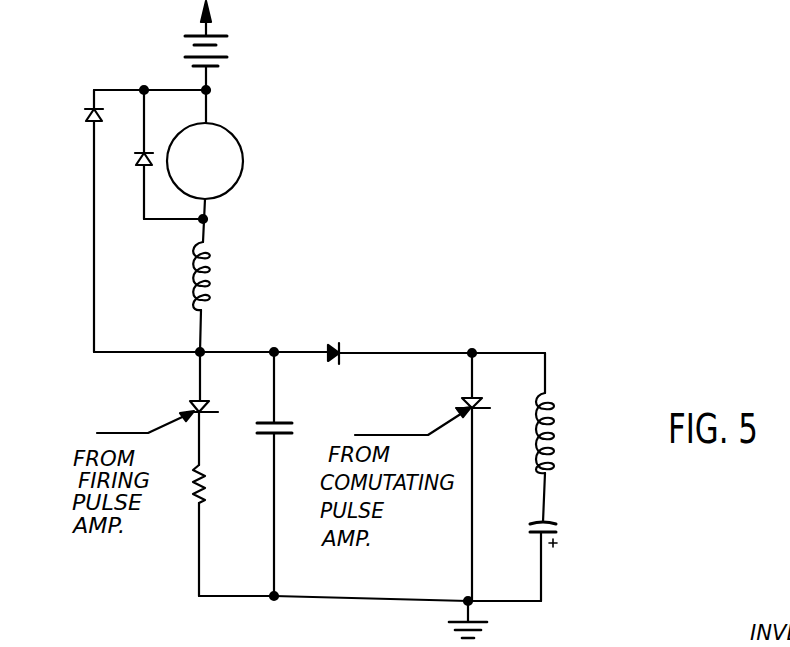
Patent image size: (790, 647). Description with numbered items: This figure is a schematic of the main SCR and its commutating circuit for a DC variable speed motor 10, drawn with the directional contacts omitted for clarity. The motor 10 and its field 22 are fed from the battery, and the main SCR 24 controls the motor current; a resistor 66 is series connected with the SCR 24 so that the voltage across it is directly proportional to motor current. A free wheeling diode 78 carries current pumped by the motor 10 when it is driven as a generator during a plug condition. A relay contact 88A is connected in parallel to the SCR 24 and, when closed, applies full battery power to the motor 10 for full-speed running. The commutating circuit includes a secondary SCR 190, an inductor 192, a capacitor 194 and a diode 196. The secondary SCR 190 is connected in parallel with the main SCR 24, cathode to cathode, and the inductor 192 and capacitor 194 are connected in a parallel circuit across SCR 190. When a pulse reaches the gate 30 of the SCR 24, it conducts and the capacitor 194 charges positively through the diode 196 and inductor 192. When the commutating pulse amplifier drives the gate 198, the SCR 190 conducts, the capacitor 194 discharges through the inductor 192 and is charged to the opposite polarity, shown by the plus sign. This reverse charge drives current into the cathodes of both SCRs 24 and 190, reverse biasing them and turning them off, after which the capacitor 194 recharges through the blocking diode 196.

The DC variable speed motor 10 is at (243, 163).
The field 22 is at (210, 270).
The main SCR 24 is at (218, 411).
The gate 30 is at (167, 421).
The resistor 66 is at (203, 496).
The free wheeling diode 78 is at (137, 151).
The contact 88A is at (260, 431).
The secondary SCR 190 is at (489, 406).
The inductor 192 is at (556, 401).
The capacitor 194 is at (556, 531).
The diode 196 is at (340, 343).
The gate 198 is at (445, 421).